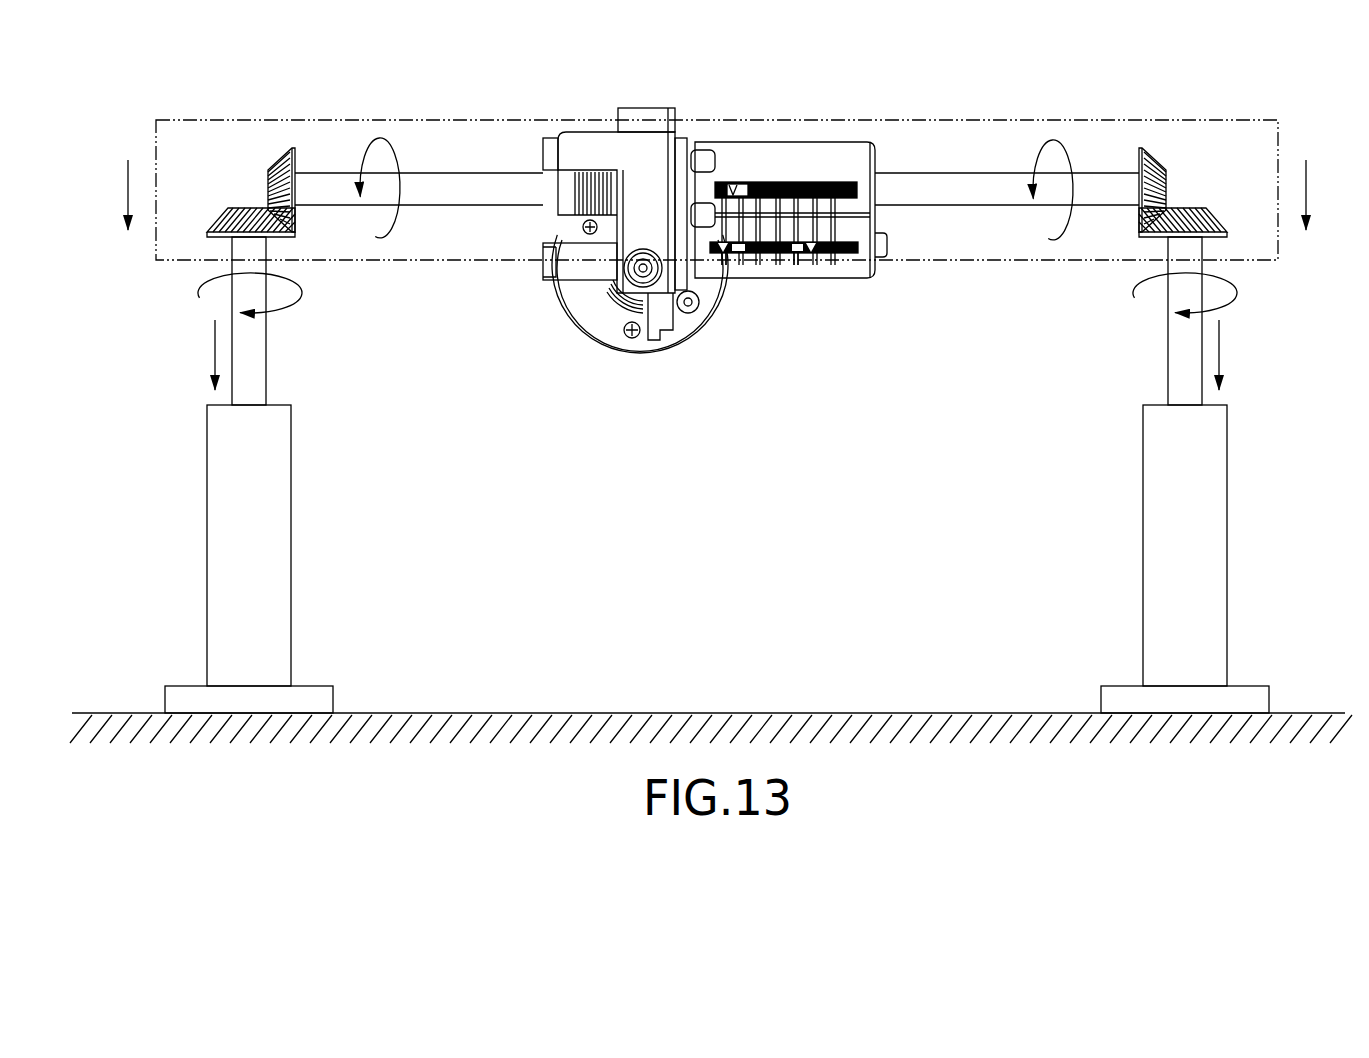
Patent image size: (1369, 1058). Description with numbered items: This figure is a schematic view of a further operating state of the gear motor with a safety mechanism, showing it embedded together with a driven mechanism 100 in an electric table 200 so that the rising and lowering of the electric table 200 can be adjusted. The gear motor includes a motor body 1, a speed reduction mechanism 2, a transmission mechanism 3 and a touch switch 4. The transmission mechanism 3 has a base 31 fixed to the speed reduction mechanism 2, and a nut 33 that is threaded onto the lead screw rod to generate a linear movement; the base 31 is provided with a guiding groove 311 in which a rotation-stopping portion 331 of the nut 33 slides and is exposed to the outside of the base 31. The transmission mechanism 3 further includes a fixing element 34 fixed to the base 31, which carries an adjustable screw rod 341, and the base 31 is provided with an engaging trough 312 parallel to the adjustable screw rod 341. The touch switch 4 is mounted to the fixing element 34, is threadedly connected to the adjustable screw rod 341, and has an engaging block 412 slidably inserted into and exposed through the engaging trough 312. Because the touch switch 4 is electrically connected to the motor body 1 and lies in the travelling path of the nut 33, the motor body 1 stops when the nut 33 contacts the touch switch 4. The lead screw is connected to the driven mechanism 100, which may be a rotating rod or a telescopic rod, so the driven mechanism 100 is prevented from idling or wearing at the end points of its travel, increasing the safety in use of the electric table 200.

The motor body 1 is at (573, 322).
The speed reduction mechanism 2 is at (597, 127).
The transmission mechanism 3 is at (813, 138).
The base 31 is at (847, 152).
The guiding groove 311 is at (786, 180).
The engaging trough 312 is at (797, 255).
The nut 33 is at (757, 184).
The rotation-stopping portion 331 is at (738, 190).
The fixing element 34 is at (852, 256).
The adjustable screw rod 341 is at (833, 258).
The touch switch 4 is at (738, 262).
The engaging block 412 is at (723, 255).
The driven mechanism 100 is at (1012, 183).
The electric table 200 is at (1095, 123).